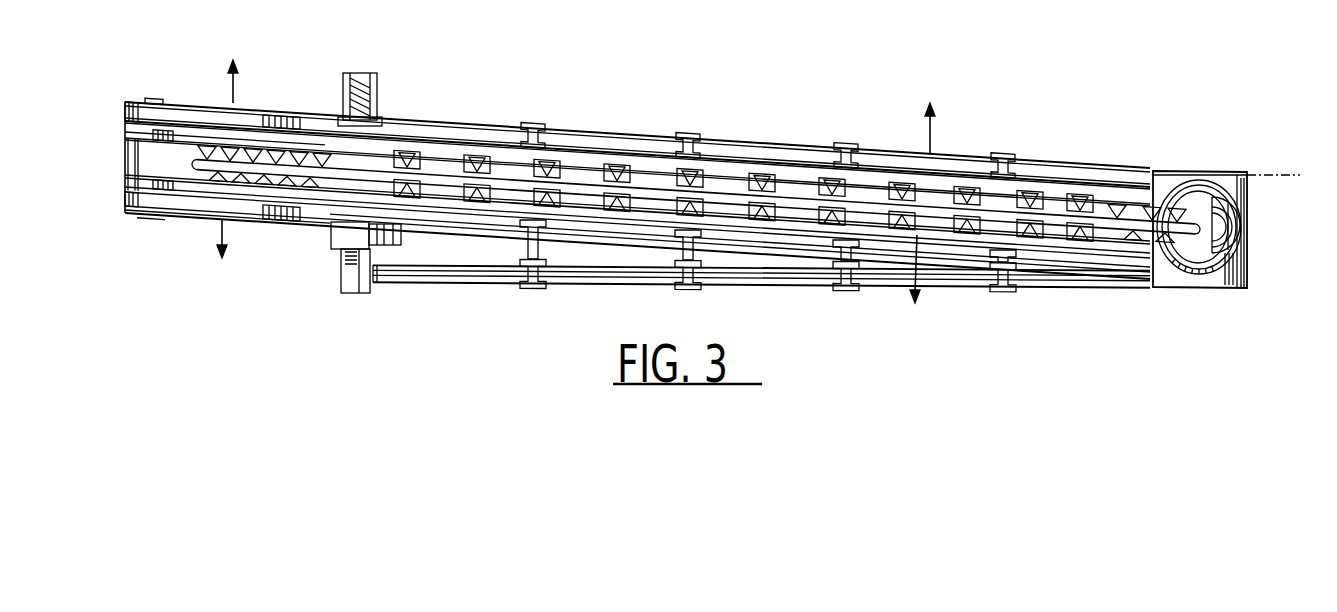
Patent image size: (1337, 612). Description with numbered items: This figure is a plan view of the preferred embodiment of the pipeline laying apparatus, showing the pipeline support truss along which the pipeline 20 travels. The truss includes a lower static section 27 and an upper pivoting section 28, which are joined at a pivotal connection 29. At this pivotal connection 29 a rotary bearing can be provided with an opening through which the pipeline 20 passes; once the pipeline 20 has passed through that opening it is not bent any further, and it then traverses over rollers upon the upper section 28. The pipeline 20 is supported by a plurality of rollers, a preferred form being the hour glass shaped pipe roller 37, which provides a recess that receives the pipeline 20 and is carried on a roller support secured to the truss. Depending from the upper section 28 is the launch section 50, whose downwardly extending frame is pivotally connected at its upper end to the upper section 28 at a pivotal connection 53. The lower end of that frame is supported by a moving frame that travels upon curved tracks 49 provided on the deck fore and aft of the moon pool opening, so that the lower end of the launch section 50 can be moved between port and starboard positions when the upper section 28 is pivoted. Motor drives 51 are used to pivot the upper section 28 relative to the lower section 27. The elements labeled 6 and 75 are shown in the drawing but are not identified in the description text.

The end housing 6 is at (1247, 232).
The pipeline 20 is at (123, 160).
The lower static section 27 is at (478, 288).
The upper pivoting section 28 is at (637, 125).
The pivotal connection 29 is at (1213, 190).
The pipe roller 37 is at (620, 200).
The curved tracks 49 is at (343, 249).
The launch section 50 is at (240, 217).
The motor drives 51 is at (397, 248).
The pivotal connection 53 is at (157, 100).
The end cap 75 is at (1252, 200).